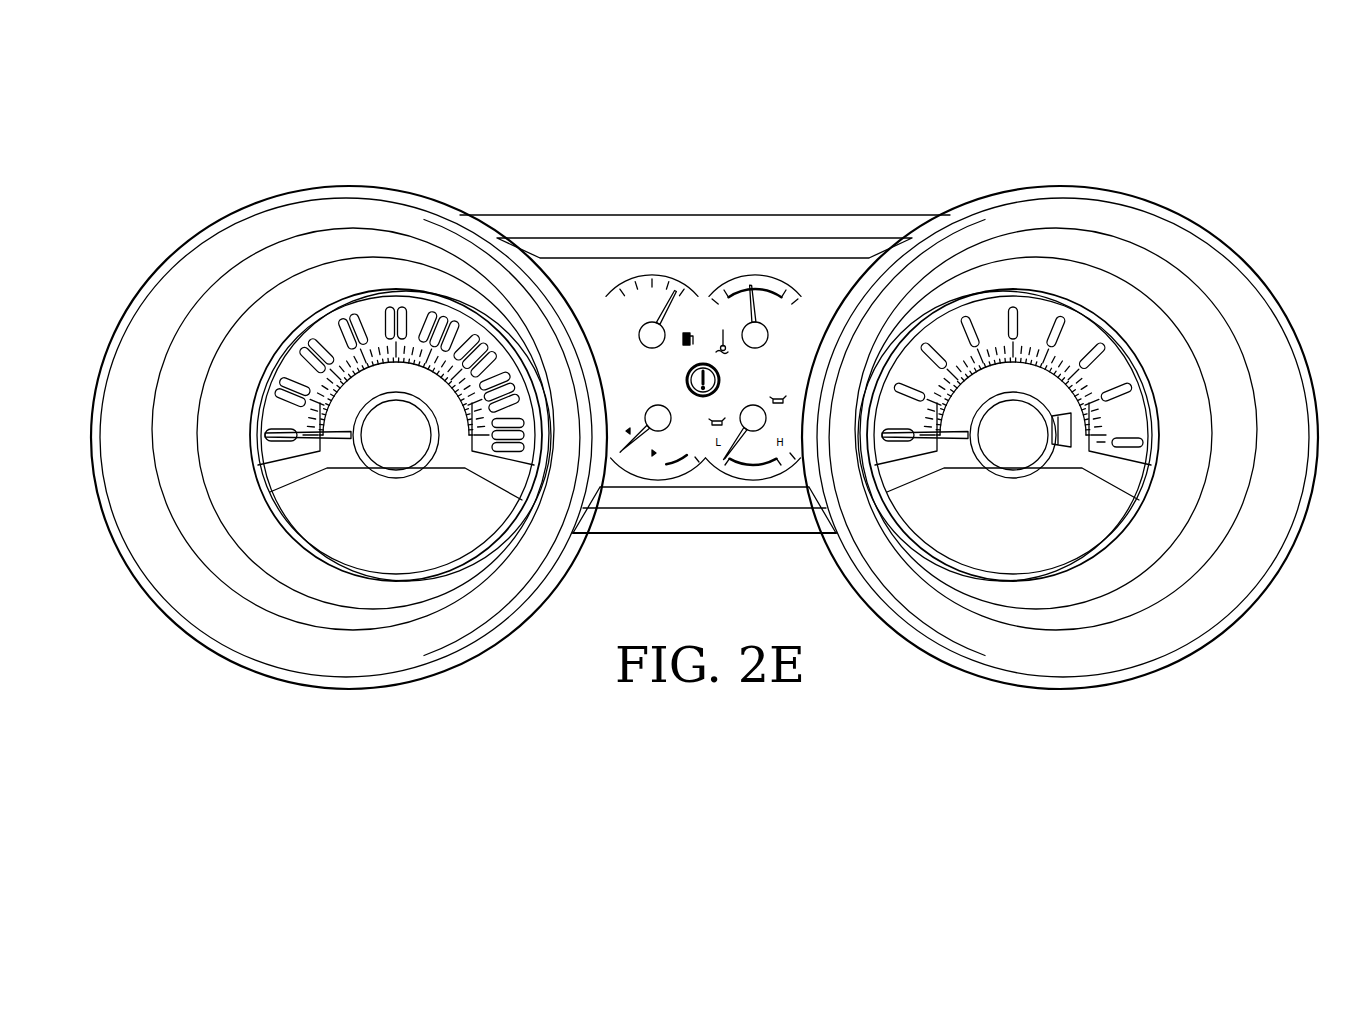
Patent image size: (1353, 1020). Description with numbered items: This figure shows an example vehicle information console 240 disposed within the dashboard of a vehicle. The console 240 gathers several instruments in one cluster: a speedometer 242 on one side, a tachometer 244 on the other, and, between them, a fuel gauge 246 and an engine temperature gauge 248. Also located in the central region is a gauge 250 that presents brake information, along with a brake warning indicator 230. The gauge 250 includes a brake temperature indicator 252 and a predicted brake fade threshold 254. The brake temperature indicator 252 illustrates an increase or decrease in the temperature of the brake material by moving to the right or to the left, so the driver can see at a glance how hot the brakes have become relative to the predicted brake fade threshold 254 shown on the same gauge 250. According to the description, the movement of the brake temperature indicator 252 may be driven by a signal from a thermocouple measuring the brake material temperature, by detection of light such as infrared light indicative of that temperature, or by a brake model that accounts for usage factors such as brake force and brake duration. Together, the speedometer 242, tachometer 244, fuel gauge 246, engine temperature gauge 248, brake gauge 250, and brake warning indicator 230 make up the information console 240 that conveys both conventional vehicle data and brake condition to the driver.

The brake warning indicator 230 is at (685, 379).
The vehicle information console 240 is at (1046, 85).
The speedometer 242 is at (253, 400).
The tachometer 244 is at (1140, 377).
The fuel gauge 246 is at (660, 273).
The engine temperature gauge 248 is at (775, 258).
The gauge 250 is at (657, 480).
The brake temperature indicator 252 is at (640, 457).
The predicted brake fade threshold 254 is at (678, 467).